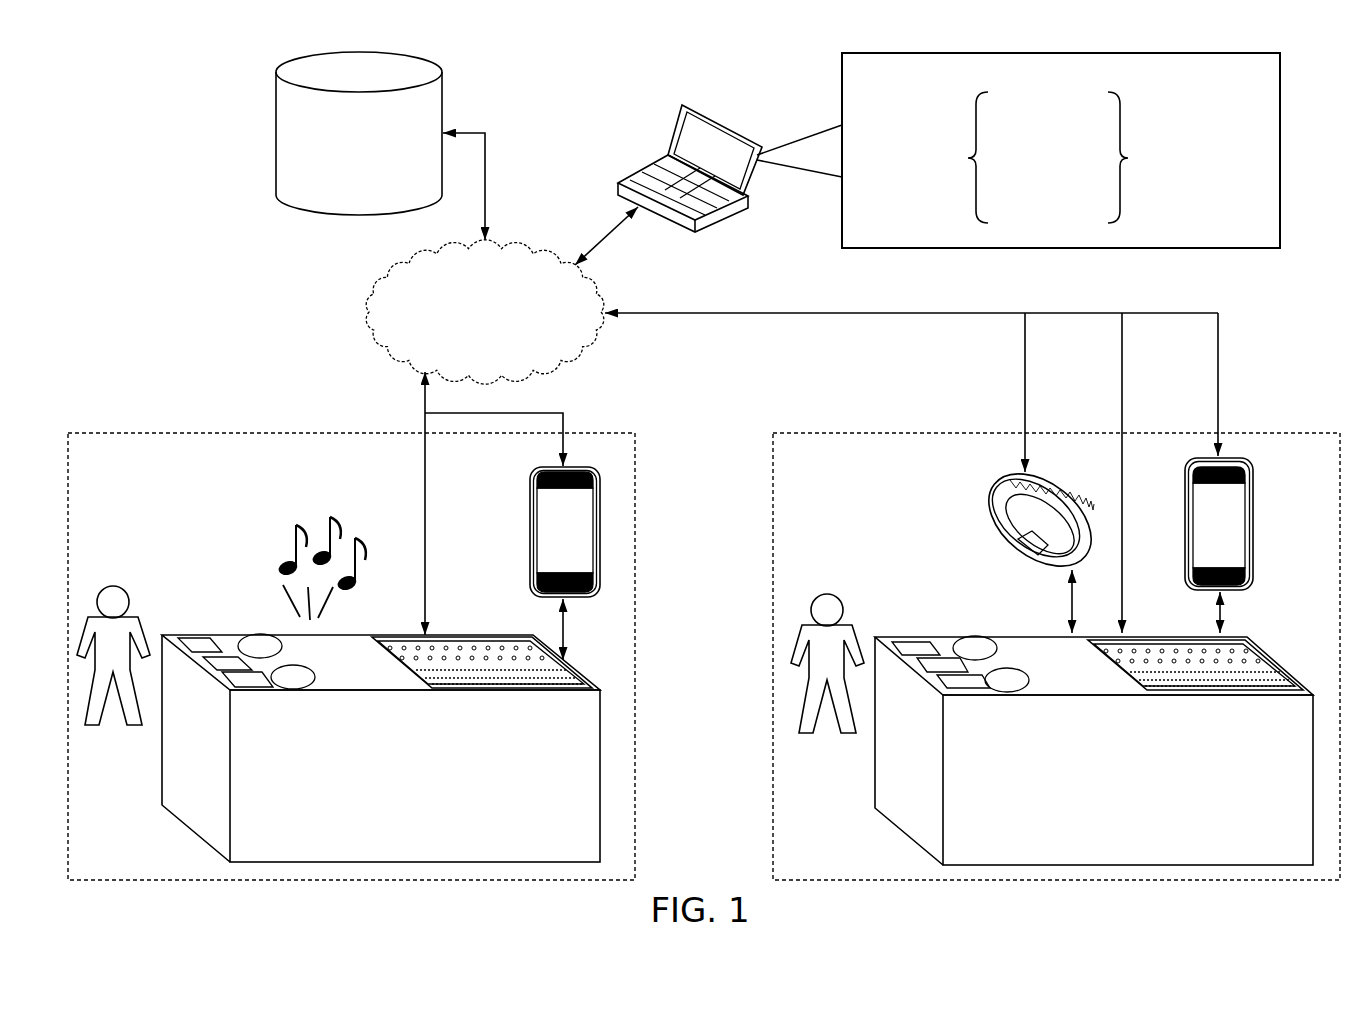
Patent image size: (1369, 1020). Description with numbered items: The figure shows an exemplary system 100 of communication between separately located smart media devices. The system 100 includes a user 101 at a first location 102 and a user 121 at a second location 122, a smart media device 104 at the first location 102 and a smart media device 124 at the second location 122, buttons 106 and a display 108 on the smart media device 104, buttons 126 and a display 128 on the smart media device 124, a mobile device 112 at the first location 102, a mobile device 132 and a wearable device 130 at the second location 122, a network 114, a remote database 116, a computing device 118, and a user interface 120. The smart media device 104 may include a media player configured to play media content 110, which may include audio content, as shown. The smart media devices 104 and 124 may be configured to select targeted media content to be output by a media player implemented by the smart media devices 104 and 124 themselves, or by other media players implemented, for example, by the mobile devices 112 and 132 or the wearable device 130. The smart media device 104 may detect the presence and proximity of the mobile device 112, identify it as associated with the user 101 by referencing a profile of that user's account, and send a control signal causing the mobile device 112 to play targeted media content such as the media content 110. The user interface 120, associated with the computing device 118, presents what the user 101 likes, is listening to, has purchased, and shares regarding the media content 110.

The system 100 is at (210, 133).
The user 101 is at (148, 603).
The location 102 is at (149, 498).
The smart media device 104 is at (399, 798).
The buttons 106 is at (270, 667).
The display 108 is at (396, 660).
The media content 110 is at (379, 547).
The mobile device 112 is at (530, 525).
The network 114 is at (466, 320).
The remote database 116 is at (343, 178).
The computing device 118 is at (680, 126).
The user interface 120 is at (909, 81).
The user 121 is at (860, 610).
The location 122 is at (852, 496).
The smart media device 124 is at (1112, 803).
The buttons 126 is at (985, 671).
The display 128 is at (1110, 666).
The wearable device 130 is at (990, 504).
The mobile device 132 is at (1253, 516).